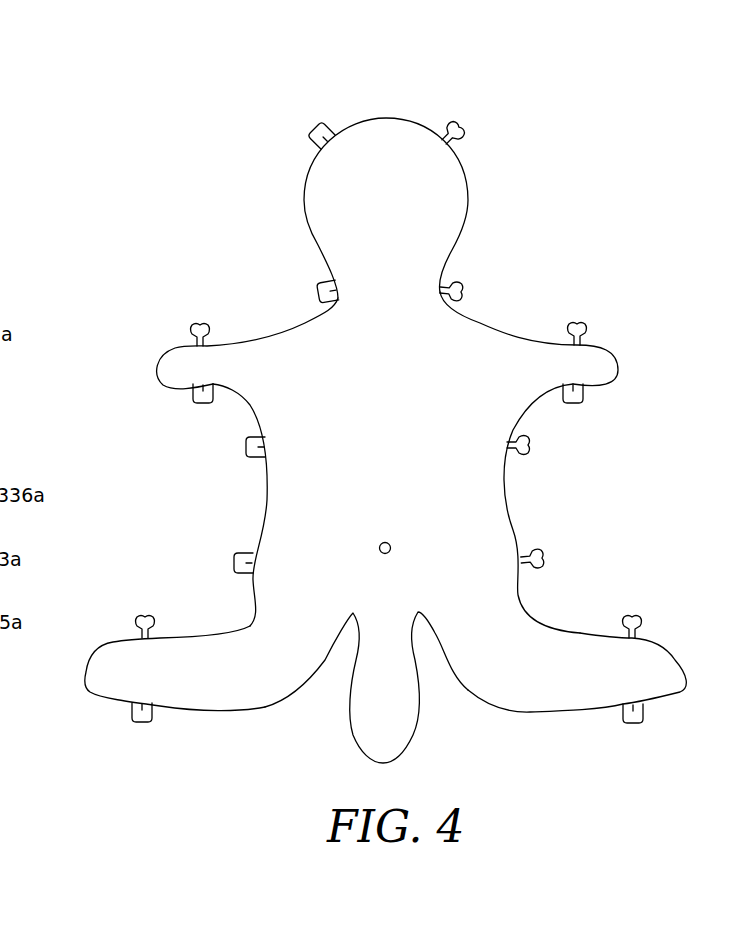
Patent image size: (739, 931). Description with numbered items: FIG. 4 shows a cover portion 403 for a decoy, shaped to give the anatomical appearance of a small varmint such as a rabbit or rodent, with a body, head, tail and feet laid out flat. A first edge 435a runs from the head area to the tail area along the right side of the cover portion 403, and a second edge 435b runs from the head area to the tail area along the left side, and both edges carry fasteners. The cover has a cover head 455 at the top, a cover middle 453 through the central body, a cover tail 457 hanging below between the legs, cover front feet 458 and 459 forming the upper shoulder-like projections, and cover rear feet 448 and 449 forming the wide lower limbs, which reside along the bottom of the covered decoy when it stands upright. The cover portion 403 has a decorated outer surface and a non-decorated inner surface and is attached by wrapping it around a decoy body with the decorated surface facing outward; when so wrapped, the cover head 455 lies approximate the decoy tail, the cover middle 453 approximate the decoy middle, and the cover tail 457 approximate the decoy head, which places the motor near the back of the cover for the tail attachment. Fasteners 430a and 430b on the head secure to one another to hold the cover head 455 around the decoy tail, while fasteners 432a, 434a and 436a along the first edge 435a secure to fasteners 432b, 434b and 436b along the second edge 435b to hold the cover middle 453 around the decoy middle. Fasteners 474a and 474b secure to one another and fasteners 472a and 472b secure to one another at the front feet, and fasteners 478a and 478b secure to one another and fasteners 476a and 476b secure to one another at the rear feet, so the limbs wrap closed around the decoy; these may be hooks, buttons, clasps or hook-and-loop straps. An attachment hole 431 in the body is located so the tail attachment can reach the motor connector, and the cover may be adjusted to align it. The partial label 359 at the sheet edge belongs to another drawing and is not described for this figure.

The cover portion 403 is at (420, 493).
The fastener 430a is at (466, 134).
The fastener 430b is at (313, 138).
The attachment hole 431 is at (379, 553).
The fastener 432a is at (462, 280).
The fastener 432b is at (313, 283).
The fastener 434a is at (529, 450).
The fastener 434b is at (246, 444).
The first edge 435a is at (468, 198).
The second edge 435b is at (305, 198).
The fastener 436a is at (543, 557).
The fastener 436b is at (232, 560).
The cover rear foot 448 is at (117, 662).
The cover rear foot 449 is at (657, 660).
The cover middle 453 is at (428, 367).
The cover head 455 is at (388, 167).
The cover tail 457 is at (390, 740).
The cover front foot 458 is at (187, 363).
The cover front foot 459 is at (590, 363).
The fastener 472a is at (582, 320).
The fastener 472b is at (573, 403).
The fastener 474a is at (193, 323).
The fastener 474b is at (200, 403).
The fastener 476a is at (627, 614).
The fastener 476b is at (638, 726).
The fastener 478a is at (145, 614).
The fastener 478b is at (141, 726).
The adjacent figure element 359 is at (0, 408).